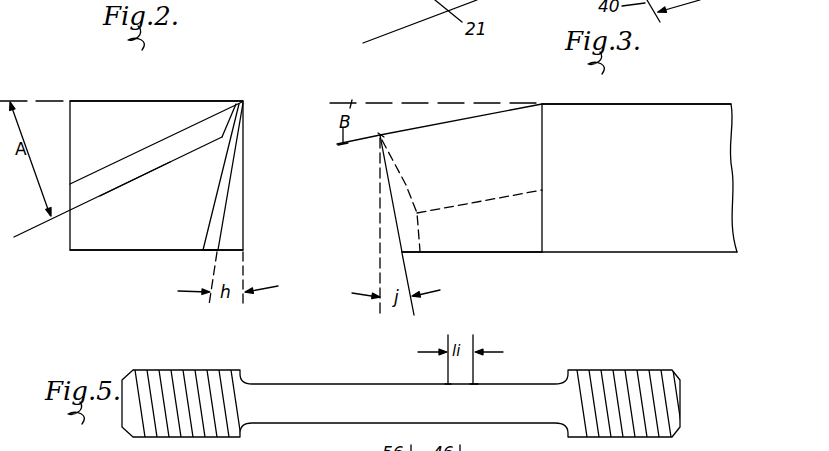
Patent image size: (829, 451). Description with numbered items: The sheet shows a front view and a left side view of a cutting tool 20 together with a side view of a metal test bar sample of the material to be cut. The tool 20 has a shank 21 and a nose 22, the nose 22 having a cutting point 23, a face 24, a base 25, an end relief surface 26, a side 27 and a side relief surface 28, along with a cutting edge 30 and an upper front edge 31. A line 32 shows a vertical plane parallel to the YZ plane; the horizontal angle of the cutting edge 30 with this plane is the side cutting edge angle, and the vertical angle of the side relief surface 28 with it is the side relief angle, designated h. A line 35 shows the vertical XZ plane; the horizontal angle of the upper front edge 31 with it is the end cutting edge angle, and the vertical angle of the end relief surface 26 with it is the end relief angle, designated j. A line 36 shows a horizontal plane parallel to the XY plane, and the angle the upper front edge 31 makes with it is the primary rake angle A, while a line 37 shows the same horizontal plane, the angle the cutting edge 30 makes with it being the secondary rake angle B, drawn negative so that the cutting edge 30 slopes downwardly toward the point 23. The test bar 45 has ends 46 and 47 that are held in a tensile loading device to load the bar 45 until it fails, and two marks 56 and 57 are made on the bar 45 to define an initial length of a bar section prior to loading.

In FIG. 2, the tool 20 is at (219, 96).
In FIG. 3, the tool 20 is at (637, 80).
In FIG. 2, the shank 21 is at (124, 100).
In FIG. 3, the shank 21 is at (683, 104).
In FIG. 3, the nose 22 is at (521, 244).
In FIG. 2, the cutting point 23 is at (222, 136).
In FIG. 3, the cutting point 23 is at (382, 135).
In FIG. 2, the face 24 is at (152, 148).
In FIG. 2, the base 25 is at (106, 252).
In FIG. 3, the base 25 is at (470, 253).
In FIG. 2, the end relief surface 26 is at (163, 230).
In FIG. 3, the end relief surface 26 is at (399, 240).
In FIG. 2, the side 27 is at (70, 238).
In FIG. 2, the side relief surface 28 is at (228, 170).
In FIG. 3, the side relief surface 28 is at (503, 116).
In FIG. 2, the cutting edge 30 is at (228, 124).
In FIG. 3, the cutting edge 30 is at (427, 125).
In FIG. 2, the upper front edge 31 is at (138, 178).
In FIG. 3, the upper front edge 31 is at (406, 185).
In FIG. 2, the line representing vertical plane 32 is at (245, 262).
In FIG. 3, the line representing vertical plane 35 is at (378, 310).
In FIG. 2, the line representing horizontal plane 36 is at (16, 100).
In FIG. 3, the line representing horizontal plane 37 is at (369, 101).
In FIG. 5, the bar 45 is at (534, 380).
In FIG. 5, the end 46 is at (201, 378).
In FIG. 5, the end 47 is at (646, 372).
In FIG. 5, the mark 56 is at (445, 383).
In FIG. 5, the mark 57 is at (477, 383).